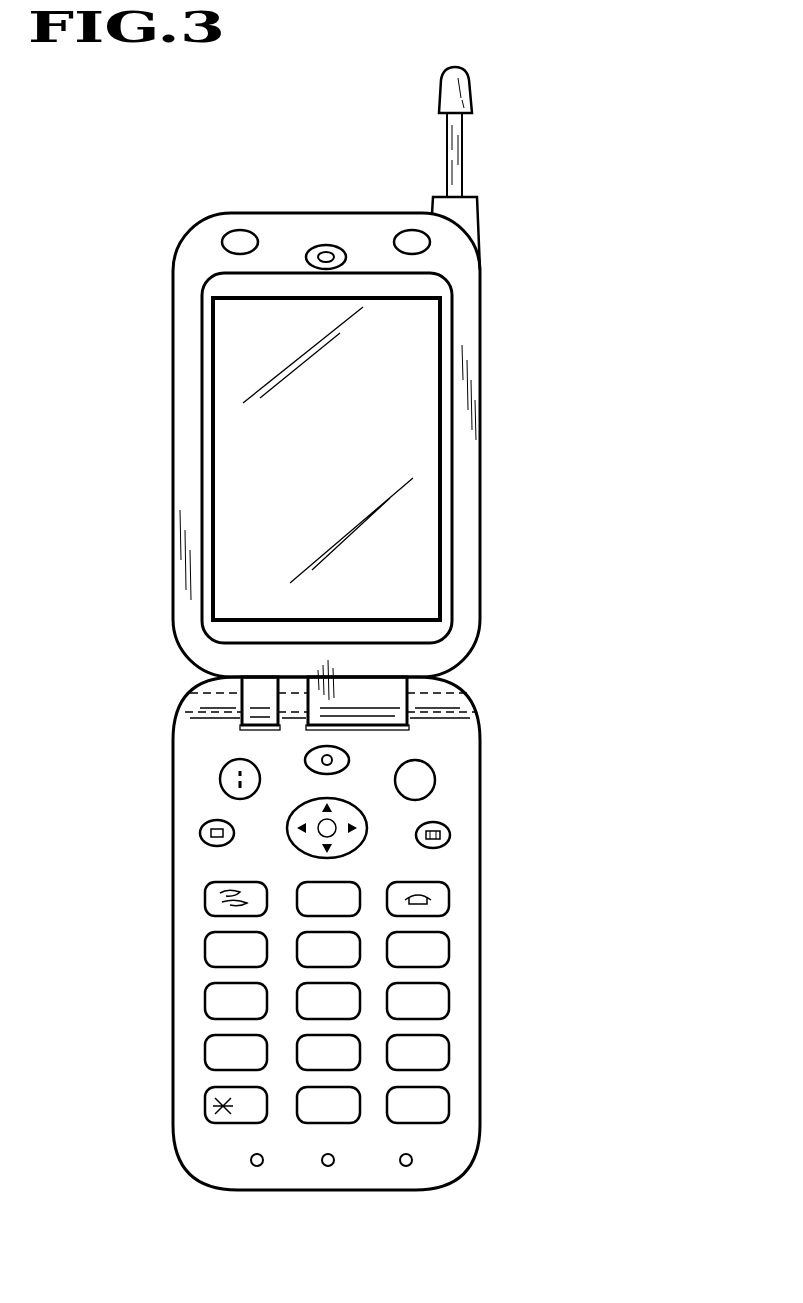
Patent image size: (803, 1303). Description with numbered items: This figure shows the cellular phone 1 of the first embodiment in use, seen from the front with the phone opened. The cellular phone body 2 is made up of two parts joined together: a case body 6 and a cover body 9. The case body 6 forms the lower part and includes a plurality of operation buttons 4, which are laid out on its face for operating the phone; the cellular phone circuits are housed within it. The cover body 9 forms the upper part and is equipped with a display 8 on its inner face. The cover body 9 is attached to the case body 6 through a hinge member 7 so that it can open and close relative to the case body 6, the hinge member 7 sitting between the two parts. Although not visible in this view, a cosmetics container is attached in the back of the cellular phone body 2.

The cellular phone 1 is at (594, 128).
The cellular phone body 2 is at (489, 476).
The operation buttons 4 is at (220, 779).
The case body 6 is at (468, 867).
The hinge member 7 is at (413, 700).
The display 8 is at (247, 455).
The cover body 9 is at (178, 425).